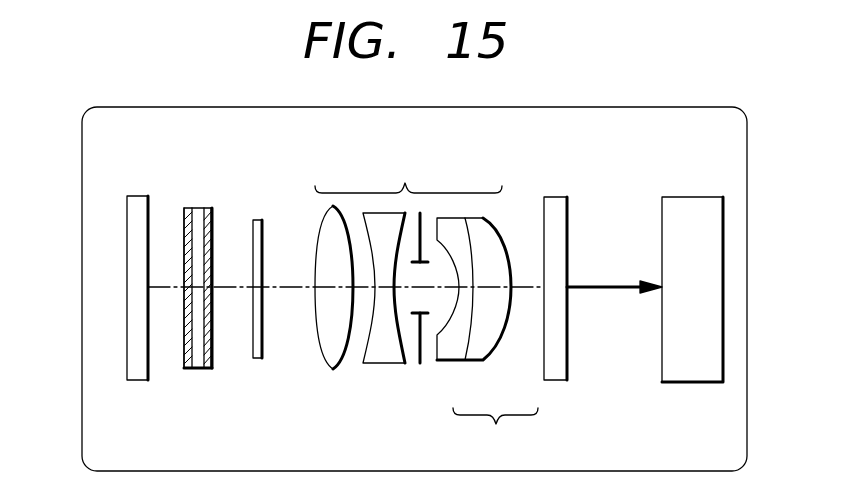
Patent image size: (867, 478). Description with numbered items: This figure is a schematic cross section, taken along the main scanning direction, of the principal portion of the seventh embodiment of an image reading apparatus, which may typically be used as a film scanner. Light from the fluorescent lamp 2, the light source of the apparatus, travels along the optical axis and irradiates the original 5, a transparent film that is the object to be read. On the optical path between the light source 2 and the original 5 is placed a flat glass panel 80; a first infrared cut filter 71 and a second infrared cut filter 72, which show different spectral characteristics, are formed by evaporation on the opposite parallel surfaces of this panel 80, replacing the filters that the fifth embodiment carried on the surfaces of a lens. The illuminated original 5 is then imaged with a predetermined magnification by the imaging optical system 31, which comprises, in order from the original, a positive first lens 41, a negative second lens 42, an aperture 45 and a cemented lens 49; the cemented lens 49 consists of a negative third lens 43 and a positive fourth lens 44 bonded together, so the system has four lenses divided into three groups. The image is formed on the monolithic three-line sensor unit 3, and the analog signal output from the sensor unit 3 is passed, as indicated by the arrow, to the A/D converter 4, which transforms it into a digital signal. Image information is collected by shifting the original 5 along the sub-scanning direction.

The fluorescent lamp 2 is at (137, 205).
The flat glass panel 80 is at (197, 216).
The first infrared cut filter 71 is at (184, 366).
The second infrared cut filter 72 is at (211, 362).
The original 5 is at (256, 221).
The imaging optical system 31 is at (405, 184).
The first lens 41 is at (330, 352).
The second lens 42 is at (382, 352).
The aperture 45 is at (421, 359).
The third lens 43 is at (457, 349).
The fourth lens 44 is at (480, 349).
The cemented lens 49 is at (495, 430).
The monolithic 3-line sensor unit 3 is at (552, 205).
The A/D converter 4 is at (690, 205).